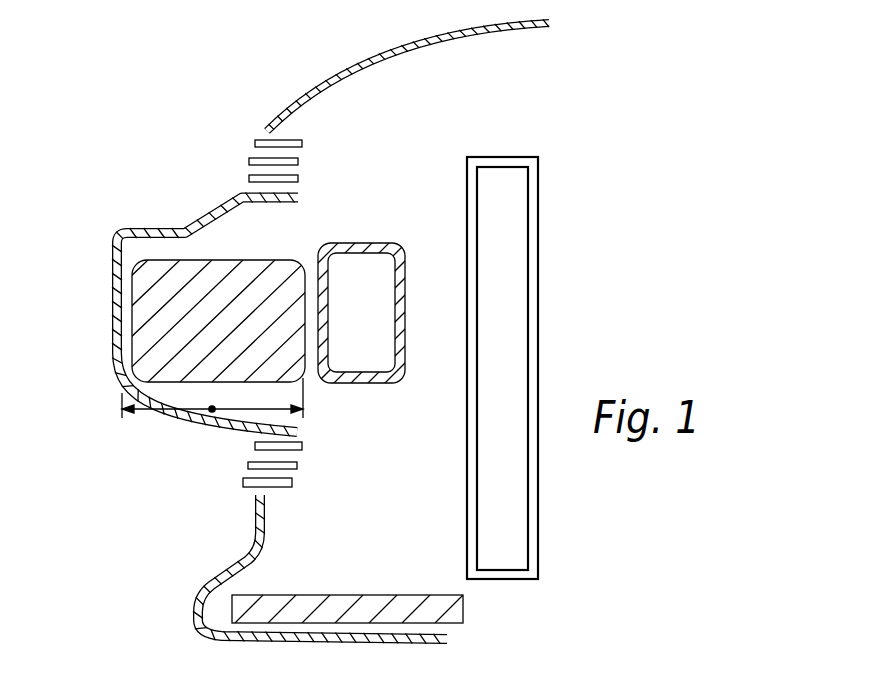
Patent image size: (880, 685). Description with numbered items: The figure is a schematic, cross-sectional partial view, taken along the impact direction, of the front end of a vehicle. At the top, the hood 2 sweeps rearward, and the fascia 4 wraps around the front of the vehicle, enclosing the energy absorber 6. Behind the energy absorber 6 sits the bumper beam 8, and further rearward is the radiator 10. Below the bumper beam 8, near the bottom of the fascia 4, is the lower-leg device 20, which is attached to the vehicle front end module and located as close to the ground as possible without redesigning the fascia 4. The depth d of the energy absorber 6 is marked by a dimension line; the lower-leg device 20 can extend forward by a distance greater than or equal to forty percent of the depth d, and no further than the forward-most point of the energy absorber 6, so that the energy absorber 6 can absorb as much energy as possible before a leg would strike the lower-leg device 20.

The hood 2 is at (332, 72).
The fascia 4 is at (113, 233).
The energy absorber 6 is at (190, 312).
The bumper beam 8 is at (370, 243).
The radiator 10 is at (538, 307).
The lower-leg device 20 is at (352, 595).
The depth of the energy absorber d is at (212, 422).